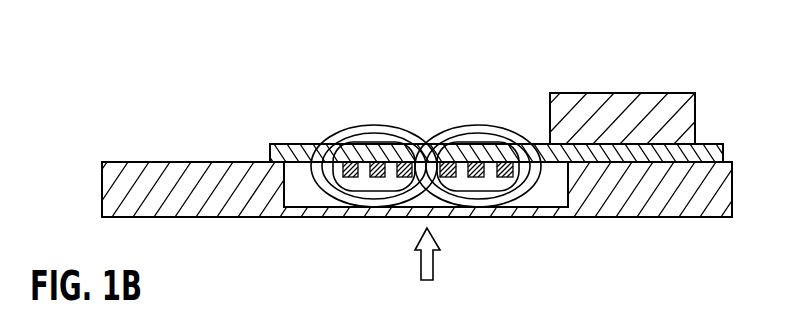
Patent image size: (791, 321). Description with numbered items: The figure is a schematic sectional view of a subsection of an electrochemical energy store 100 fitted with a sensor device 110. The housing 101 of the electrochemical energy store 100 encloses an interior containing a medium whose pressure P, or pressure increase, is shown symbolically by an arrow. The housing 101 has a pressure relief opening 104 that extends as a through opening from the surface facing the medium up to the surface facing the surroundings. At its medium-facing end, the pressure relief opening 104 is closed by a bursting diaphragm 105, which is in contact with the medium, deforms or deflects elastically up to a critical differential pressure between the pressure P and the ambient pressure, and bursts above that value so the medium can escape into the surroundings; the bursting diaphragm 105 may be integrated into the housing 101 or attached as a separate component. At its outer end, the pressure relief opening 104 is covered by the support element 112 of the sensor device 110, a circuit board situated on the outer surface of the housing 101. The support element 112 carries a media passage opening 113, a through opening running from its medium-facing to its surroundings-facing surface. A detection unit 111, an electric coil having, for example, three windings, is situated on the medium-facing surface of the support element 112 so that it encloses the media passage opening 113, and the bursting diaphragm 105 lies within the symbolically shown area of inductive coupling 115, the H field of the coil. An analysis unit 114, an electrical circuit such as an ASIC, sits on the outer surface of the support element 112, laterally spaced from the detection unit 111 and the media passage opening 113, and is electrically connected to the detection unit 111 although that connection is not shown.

The electrochemical energy store 100 is at (242, 103).
The housing 101 is at (170, 190).
The pressure relief opening 104 is at (546, 198).
The bursting diaphragm 105 is at (312, 214).
The sensor device 110 is at (375, 90).
The detection unit 111 is at (460, 135).
The support element 112 is at (628, 150).
The media passage opening 113 is at (426, 177).
The analysis unit 114 is at (618, 115).
The area of inductive coupling 115 is at (337, 135).
The pressure P is at (428, 263).